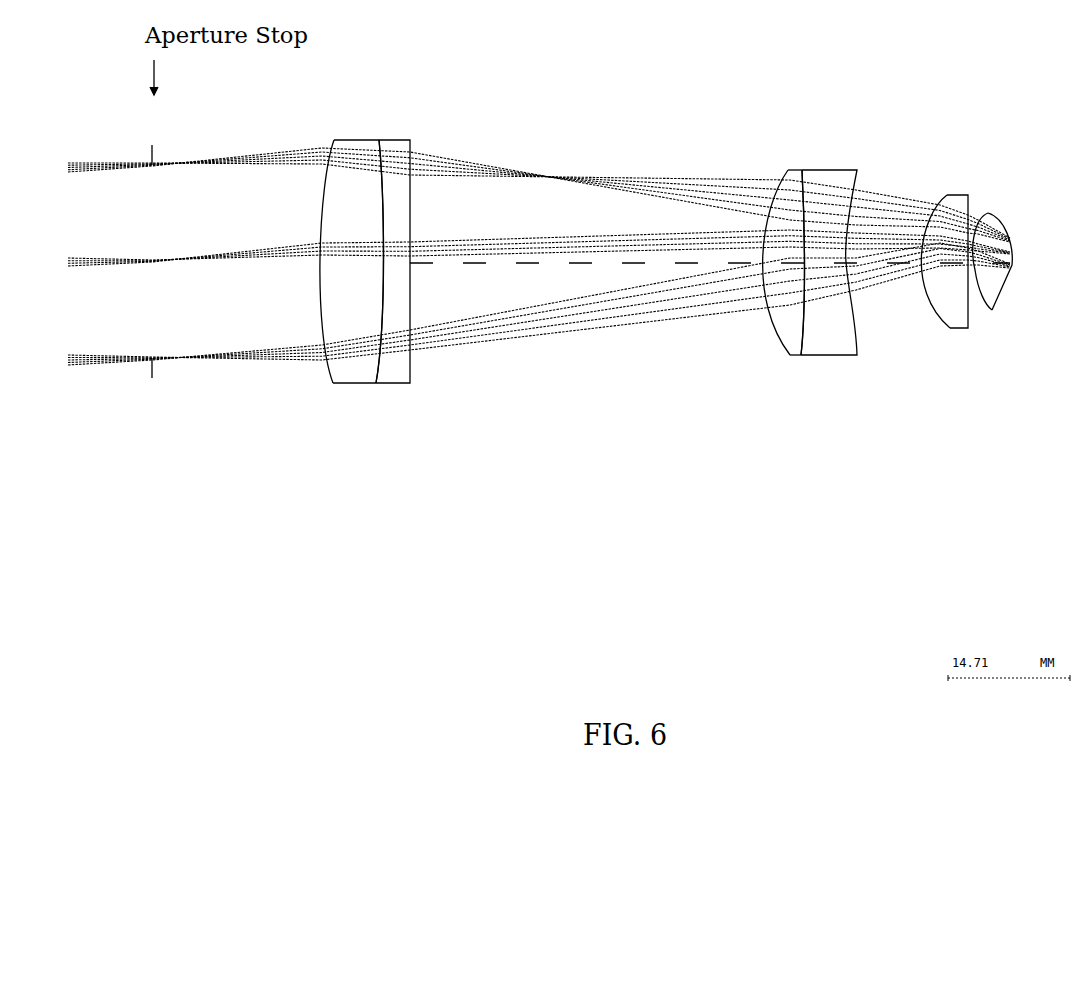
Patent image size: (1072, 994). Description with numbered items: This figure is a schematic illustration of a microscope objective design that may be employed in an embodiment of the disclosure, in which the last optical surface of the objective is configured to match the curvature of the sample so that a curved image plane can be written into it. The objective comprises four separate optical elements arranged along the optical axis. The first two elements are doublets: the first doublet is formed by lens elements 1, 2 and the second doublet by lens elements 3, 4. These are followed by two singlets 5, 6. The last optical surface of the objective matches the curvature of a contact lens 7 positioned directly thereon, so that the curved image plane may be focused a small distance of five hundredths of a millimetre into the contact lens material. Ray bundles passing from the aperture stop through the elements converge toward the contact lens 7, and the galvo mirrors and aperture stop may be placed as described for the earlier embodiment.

The first doublet element 1 is at (353, 389).
The first doublet element 2 is at (390, 389).
The second doublet element 3 is at (795, 360).
The second doublet element 4 is at (826, 360).
The singlet 5 is at (957, 333).
The singlet 6 is at (986, 312).
The contact lens 7 is at (1002, 305).